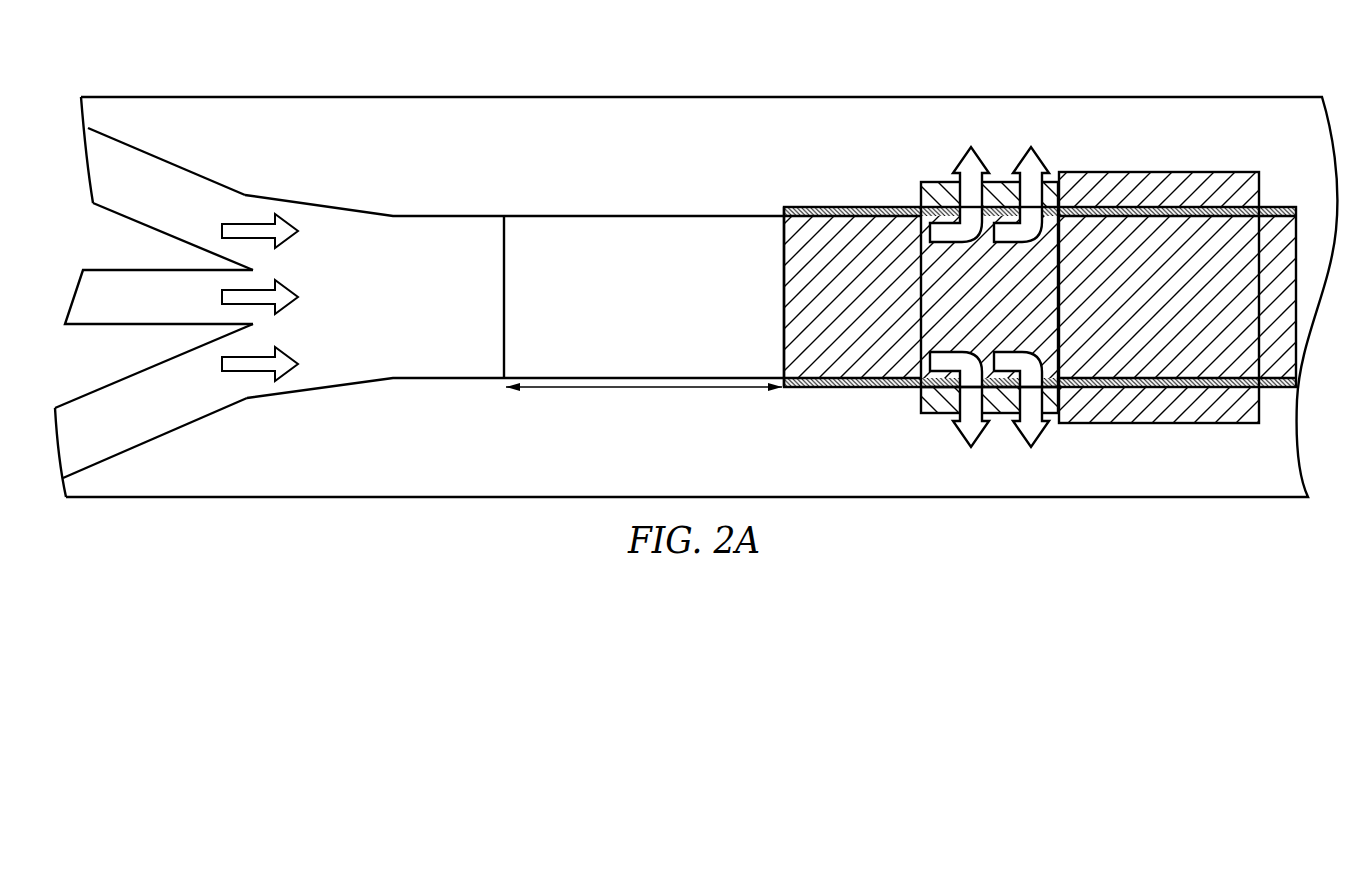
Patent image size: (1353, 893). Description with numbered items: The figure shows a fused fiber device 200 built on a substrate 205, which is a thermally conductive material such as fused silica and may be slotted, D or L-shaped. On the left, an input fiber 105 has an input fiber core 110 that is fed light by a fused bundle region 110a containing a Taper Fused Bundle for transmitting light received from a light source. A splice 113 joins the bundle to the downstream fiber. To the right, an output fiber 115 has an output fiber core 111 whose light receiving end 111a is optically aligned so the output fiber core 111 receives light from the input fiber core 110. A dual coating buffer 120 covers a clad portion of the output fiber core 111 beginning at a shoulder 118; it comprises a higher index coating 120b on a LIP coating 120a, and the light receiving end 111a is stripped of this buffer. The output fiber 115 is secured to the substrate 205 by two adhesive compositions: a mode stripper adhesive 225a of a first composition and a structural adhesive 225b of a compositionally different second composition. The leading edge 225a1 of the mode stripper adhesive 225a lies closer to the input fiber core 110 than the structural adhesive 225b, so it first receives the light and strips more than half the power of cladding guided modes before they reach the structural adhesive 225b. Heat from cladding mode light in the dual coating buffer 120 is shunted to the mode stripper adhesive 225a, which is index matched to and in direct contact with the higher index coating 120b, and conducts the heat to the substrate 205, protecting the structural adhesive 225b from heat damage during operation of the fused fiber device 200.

The fused fiber device 200 is at (696, 274).
The substrate 205 is at (696, 297).
The input fiber 105 is at (318, 418).
The input fiber core 110 is at (378, 297).
The fused bundle region 110a is at (315, 178).
The output fiber core 111 is at (644, 297).
The light receiving end 111a is at (640, 388).
The splice 113 is at (507, 233).
The output fiber 115 is at (1004, 288).
The shoulder 118 is at (784, 208).
The dual coating buffer 120 is at (1040, 245).
The LIP coating 120a is at (1040, 211).
The higher index coating 120b is at (903, 128).
The mode stripper adhesive 225a is at (997, 182).
The leading edge 225a1 is at (921, 400).
The structural adhesive 225b is at (1135, 182).